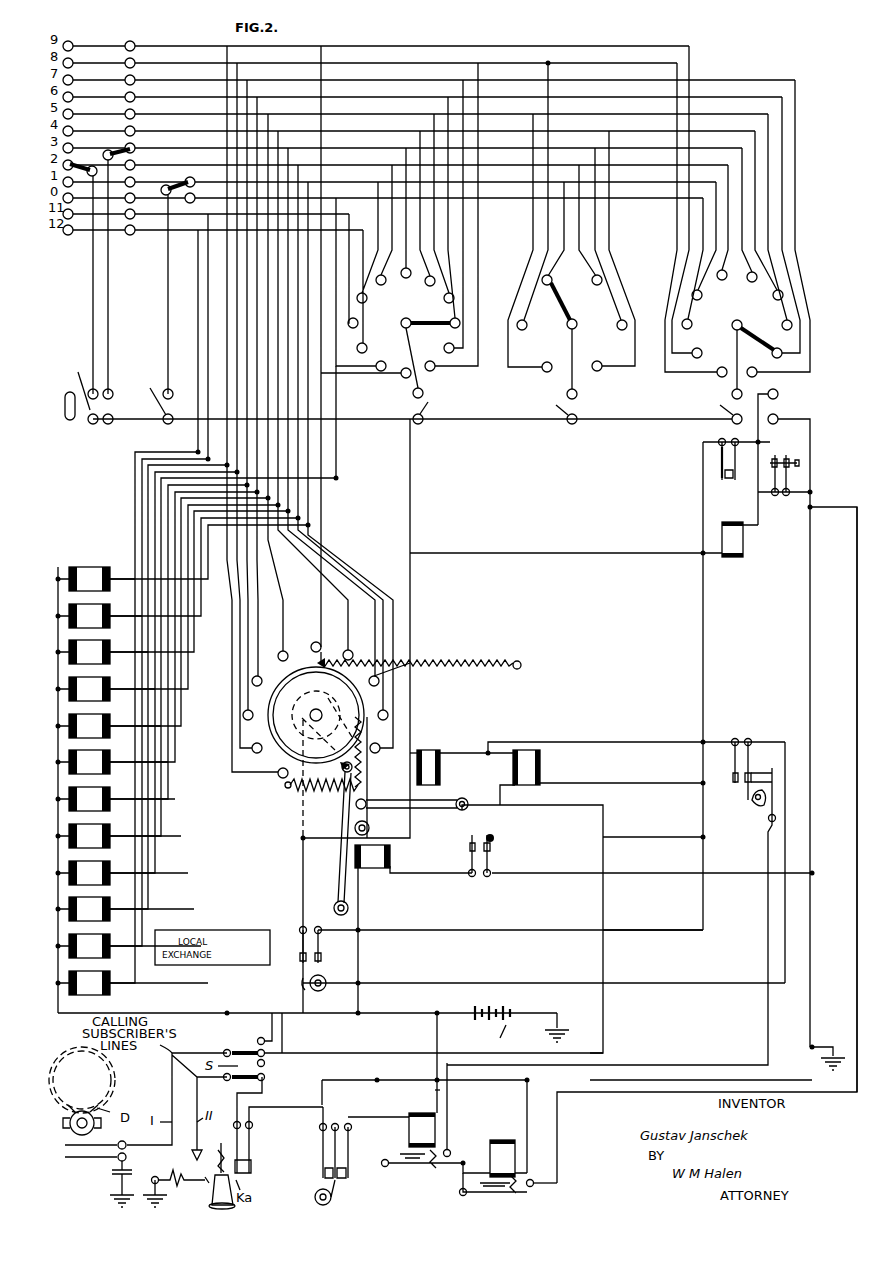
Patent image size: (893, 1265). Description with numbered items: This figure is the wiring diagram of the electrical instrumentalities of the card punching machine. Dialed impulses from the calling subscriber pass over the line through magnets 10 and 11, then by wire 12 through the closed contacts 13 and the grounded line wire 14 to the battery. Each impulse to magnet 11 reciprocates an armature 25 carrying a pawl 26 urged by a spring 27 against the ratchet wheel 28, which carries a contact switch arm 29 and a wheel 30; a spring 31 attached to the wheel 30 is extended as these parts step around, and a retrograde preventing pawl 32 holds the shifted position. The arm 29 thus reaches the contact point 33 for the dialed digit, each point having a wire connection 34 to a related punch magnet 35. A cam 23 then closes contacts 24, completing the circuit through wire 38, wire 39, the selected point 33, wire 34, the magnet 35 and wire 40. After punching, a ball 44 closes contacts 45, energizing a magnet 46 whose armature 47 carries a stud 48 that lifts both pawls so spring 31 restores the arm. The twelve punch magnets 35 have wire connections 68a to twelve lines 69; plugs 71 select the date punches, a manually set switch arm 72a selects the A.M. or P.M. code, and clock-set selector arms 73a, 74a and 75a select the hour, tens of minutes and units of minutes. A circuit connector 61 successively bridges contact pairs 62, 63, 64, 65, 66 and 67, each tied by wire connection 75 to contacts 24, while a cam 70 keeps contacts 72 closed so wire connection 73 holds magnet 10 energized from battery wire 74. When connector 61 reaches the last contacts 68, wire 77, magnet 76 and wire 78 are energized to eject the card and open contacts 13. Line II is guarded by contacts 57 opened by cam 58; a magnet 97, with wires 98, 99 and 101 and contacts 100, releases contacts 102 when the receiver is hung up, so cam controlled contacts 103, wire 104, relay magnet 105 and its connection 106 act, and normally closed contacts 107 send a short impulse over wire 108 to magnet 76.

The lines 69 is at (400, 80).
The plugs 71 is at (108, 152).
The manually set switch arm 72a is at (186, 180).
The hour selector arm 73a is at (401, 323).
The tens of minute selector arm 74a is at (568, 300).
The minute selector arm 75a is at (748, 324).
The circuit connector 61 is at (70, 392).
The contact points 62 is at (78, 374).
The contact points 63 is at (117, 406).
The contact points 64 is at (150, 392).
The contact points 65 is at (425, 400).
The contact points 66 is at (556, 400).
The contact points 67 is at (720, 400).
The last contacts 68 is at (776, 400).
The wire connections 68a is at (200, 437).
The contacts 13 is at (720, 462).
The wire 77 is at (758, 470).
The magnet 76 is at (740, 540).
The wire 108 is at (855, 560).
The wire connection 75 is at (410, 510).
The wire 78 is at (475, 553).
The wire connection 34 is at (385, 640).
The contact point 33 is at (380, 678).
The spring 31 is at (465, 662).
The ratchet wheel 28 is at (353, 706).
The pawl 26 is at (380, 730).
The wire 12 is at (703, 690).
The wire connection 73 is at (600, 742).
The cam controlled contacts 103 is at (765, 768).
The magnet 11 is at (440, 770).
The magnet 10 is at (513, 770).
The contacts 72 is at (740, 790).
The cam 70 is at (756, 806).
The wheel 30 is at (283, 768).
The stud 48 is at (340, 766).
The contact switch arm 29 is at (355, 768).
The spring 27 is at (312, 793).
The retrograde preventing pawl 32 is at (369, 825).
The armature 25 is at (426, 808).
The ball 44 is at (498, 832).
The contacts 45 is at (470, 863).
The wire 38 is at (700, 836).
The armature 47 is at (340, 880).
The magnet 46 is at (370, 870).
The wire 39 is at (303, 900).
The wire 104 is at (765, 945).
The contacts 24 is at (316, 952).
The cam 23 is at (324, 982).
The wire 74 is at (560, 978).
The line wire 14 is at (808, 1022).
The punch magnets 35 is at (120, 985).
The wire 40 is at (227, 1012).
The wire 101 is at (377, 1080).
The wire 99 is at (378, 1117).
The wire 98 is at (436, 1092).
The magnet 97 is at (425, 1128).
The conductor 106 is at (527, 1108).
The relay magnet 105 is at (502, 1160).
The cam 58 is at (315, 1195).
The contacts 57 is at (345, 1180).
The contacts 100 is at (315, 1160).
The contacts 102 is at (398, 1170).
The contacts 107 is at (480, 1195).